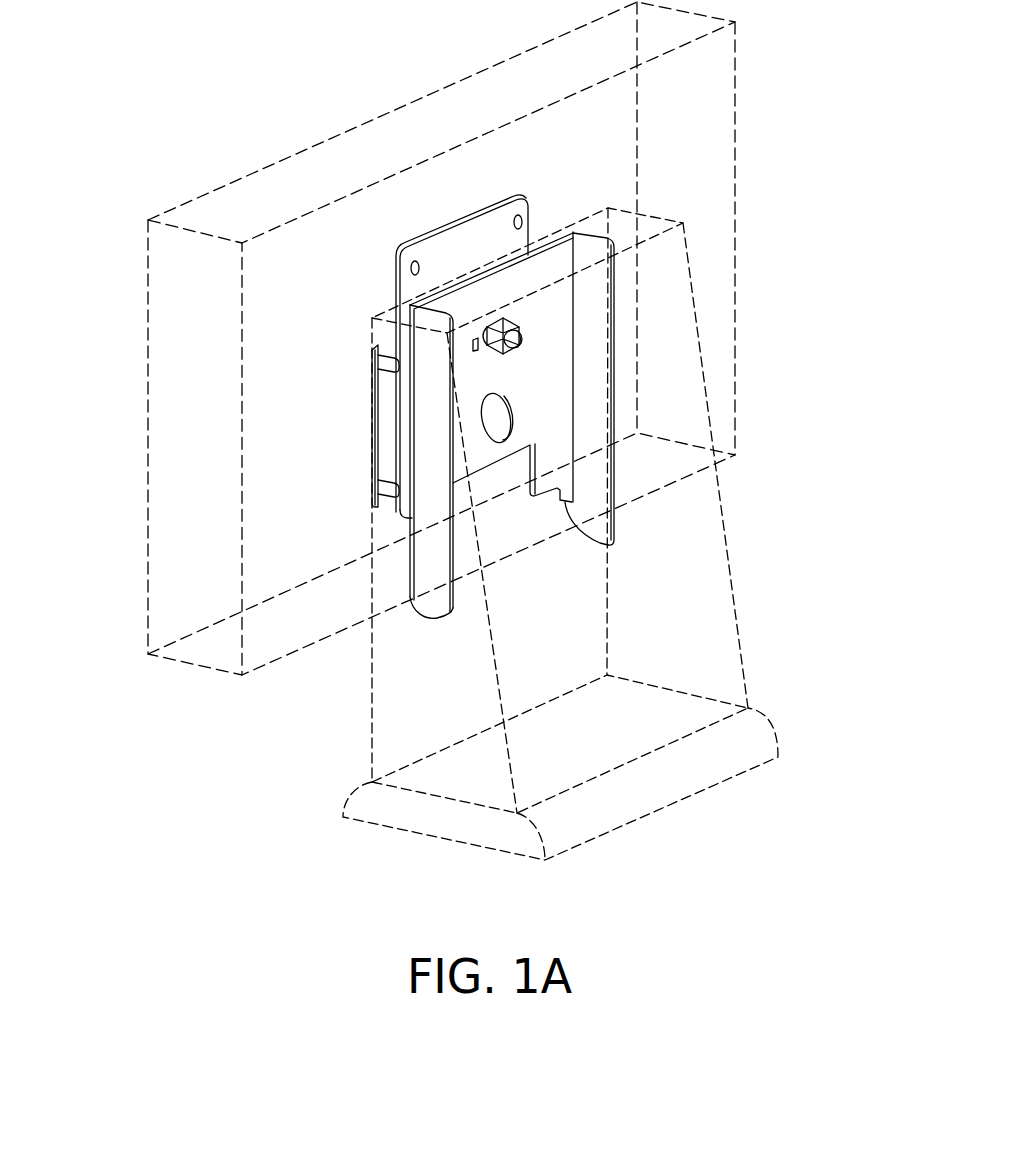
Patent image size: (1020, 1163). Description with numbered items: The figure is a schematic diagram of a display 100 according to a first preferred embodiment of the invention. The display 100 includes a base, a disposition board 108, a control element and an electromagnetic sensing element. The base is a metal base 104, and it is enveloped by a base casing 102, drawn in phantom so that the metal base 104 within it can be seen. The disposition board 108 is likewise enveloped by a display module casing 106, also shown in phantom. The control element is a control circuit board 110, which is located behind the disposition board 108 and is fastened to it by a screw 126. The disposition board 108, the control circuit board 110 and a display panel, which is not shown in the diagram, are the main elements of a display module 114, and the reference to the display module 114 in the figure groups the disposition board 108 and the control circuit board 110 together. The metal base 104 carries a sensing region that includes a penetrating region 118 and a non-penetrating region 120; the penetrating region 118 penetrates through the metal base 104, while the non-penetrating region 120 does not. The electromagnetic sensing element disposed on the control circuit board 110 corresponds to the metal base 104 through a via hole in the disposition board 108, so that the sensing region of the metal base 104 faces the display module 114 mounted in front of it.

The display 100 is at (312, 793).
The base casing 102 is at (742, 622).
The metal base 104 is at (608, 236).
The display module casing 106 is at (357, 127).
The disposition board 108 is at (398, 291).
The control circuit board 110 is at (384, 343).
The display module 114 is at (88, 258).
The penetrating region 118 is at (522, 420).
The non-penetrating region 120 is at (493, 313).
The screw 126 is at (377, 357).